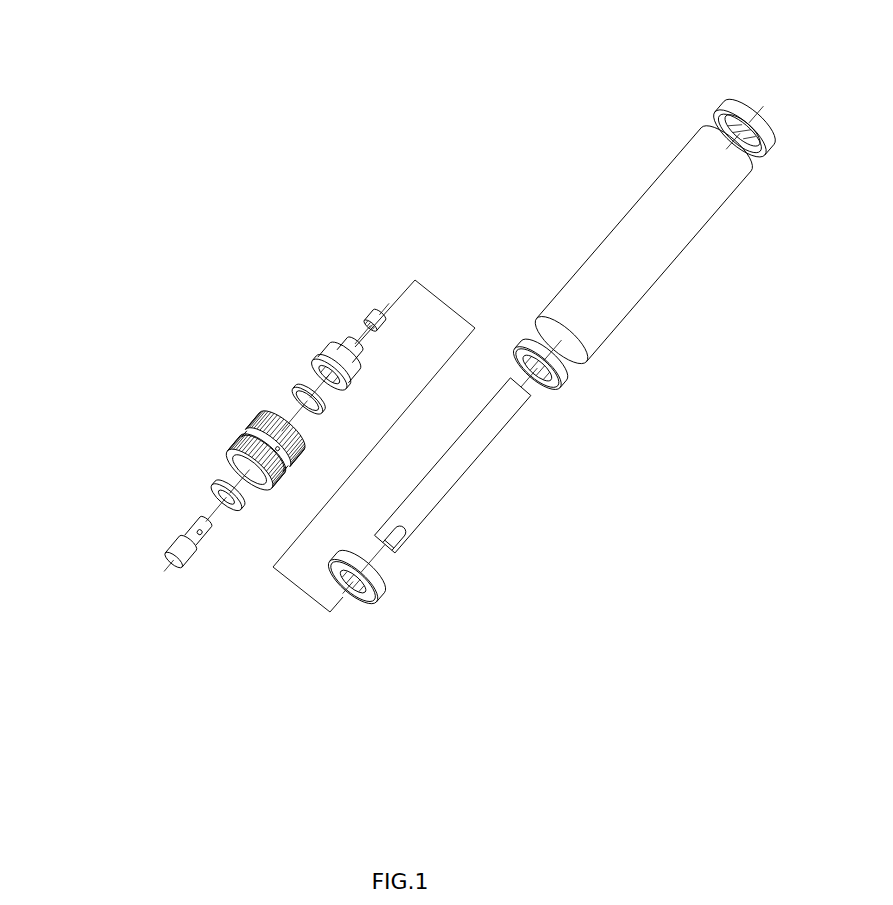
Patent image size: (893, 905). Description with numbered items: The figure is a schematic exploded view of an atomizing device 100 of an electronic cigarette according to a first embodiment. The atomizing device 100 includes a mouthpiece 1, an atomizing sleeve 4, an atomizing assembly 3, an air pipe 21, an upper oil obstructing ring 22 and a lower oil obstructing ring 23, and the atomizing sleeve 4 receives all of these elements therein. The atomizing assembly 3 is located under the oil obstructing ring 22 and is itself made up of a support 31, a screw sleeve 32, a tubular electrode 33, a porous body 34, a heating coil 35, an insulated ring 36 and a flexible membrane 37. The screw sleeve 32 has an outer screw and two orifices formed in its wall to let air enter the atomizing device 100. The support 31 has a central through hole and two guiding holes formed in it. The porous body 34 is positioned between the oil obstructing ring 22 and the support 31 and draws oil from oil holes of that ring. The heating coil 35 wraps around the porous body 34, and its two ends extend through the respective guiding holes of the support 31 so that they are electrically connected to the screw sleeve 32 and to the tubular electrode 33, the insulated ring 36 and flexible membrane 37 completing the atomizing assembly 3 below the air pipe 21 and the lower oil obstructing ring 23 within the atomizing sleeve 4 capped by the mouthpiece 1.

The atomizing device 100 is at (412, 139).
The mouthpiece 1 is at (722, 98).
The atomizing sleeve 4 is at (648, 190).
The atomizing assembly 3 is at (243, 222).
The air pipe 21 is at (442, 492).
The upper oil obstructing ring 22 is at (577, 385).
The lower oil obstructing ring 23 is at (377, 590).
The support 31 is at (322, 347).
The screw sleeve 32 is at (240, 442).
The tubular electrode 33 is at (183, 540).
The porous body 34 is at (363, 317).
The heating coil 35 is at (373, 317).
The insulated ring 36 is at (213, 487).
The flexible membrane 37 is at (295, 385).